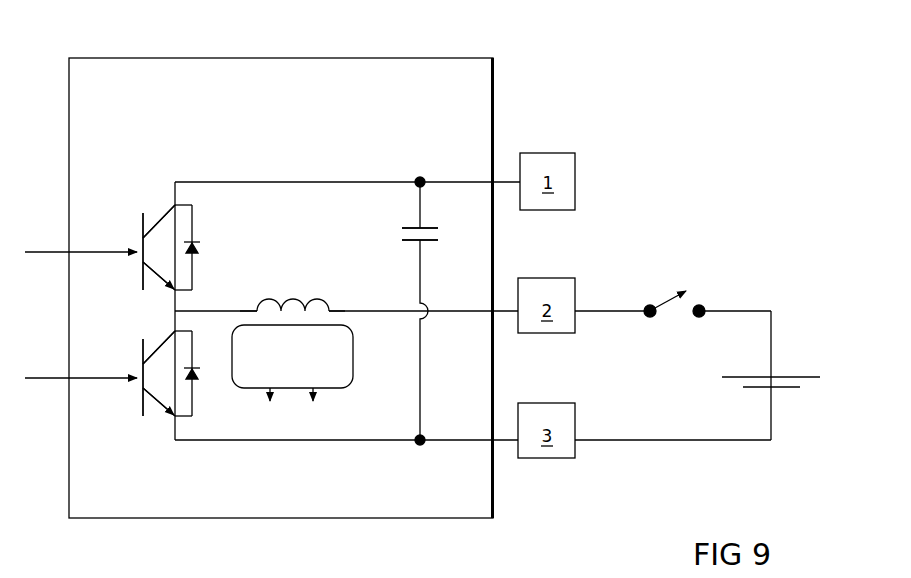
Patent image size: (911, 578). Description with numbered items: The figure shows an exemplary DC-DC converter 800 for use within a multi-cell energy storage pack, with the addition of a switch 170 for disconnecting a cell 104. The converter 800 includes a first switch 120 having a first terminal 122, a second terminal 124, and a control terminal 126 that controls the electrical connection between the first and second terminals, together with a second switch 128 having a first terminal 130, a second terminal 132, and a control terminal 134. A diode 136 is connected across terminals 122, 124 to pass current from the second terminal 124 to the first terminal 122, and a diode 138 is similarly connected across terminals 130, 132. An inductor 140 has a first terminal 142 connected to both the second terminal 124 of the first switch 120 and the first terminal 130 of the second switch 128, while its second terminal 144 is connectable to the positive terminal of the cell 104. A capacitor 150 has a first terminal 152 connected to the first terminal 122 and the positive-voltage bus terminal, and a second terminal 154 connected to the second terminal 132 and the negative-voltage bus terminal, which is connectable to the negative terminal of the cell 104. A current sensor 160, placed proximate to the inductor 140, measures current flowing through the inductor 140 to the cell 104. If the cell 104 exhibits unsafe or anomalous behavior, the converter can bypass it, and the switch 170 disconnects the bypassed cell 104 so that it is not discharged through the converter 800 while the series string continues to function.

The DC-DC converter 800 is at (279, 128).
The first switch 120 is at (130, 235).
The first terminal 122 is at (163, 216).
The second terminal 124 is at (172, 291).
The control terminal 126 is at (141, 259).
The second switch 128 is at (131, 400).
The first terminal 130 is at (166, 340).
The second terminal 132 is at (165, 417).
The control terminal 134 is at (143, 365).
The diode 136 is at (196, 249).
The diode 138 is at (196, 375).
The inductor 140 is at (299, 294).
The first terminal 142 is at (258, 303).
The second terminal 144 is at (330, 304).
The capacitor 150 is at (396, 238).
The first terminal 152 is at (432, 227).
The second terminal 154 is at (430, 241).
The current sensor 160 is at (355, 365).
The switch 170 is at (677, 292).
The cell 104 is at (784, 372).